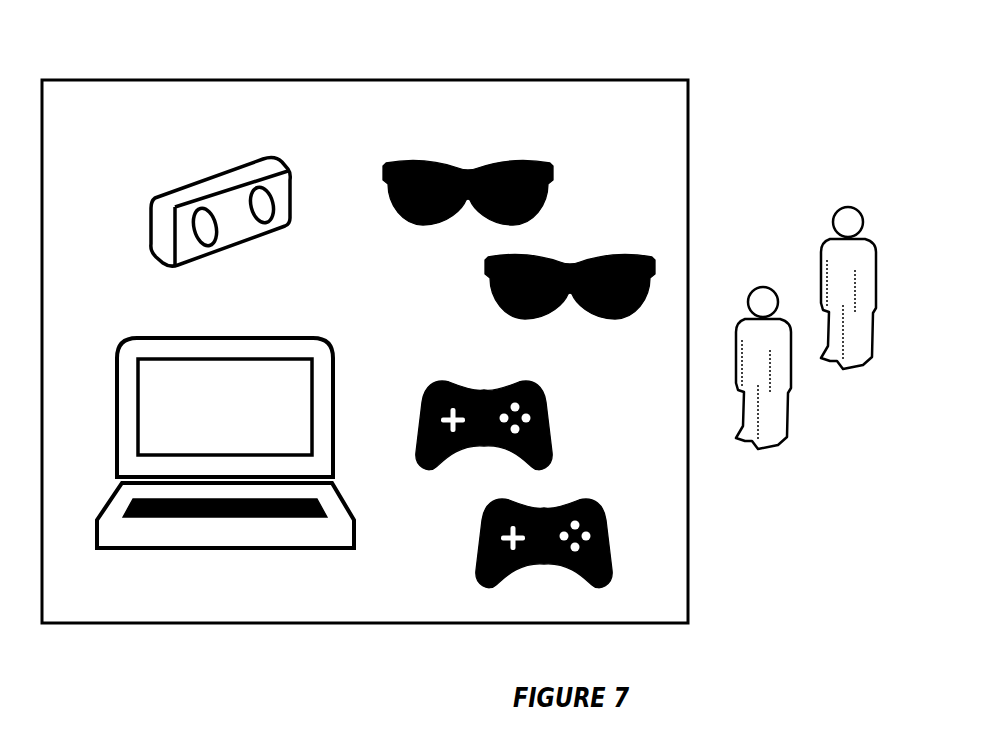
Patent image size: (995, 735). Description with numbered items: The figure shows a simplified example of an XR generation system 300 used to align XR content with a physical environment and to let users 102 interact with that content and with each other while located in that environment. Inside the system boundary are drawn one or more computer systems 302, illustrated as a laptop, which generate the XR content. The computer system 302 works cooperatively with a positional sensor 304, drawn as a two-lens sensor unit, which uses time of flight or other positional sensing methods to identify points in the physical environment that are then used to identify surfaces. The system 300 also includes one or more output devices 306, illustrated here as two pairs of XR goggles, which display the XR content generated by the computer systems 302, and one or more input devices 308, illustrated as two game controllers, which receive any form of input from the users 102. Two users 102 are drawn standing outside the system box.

The XR generation system 300 is at (316, 60).
The computer system 302 is at (177, 338).
The positional sensor 304 is at (188, 185).
The output device 306 is at (487, 165).
The input device 308 is at (550, 430).
The user 102 is at (778, 443).